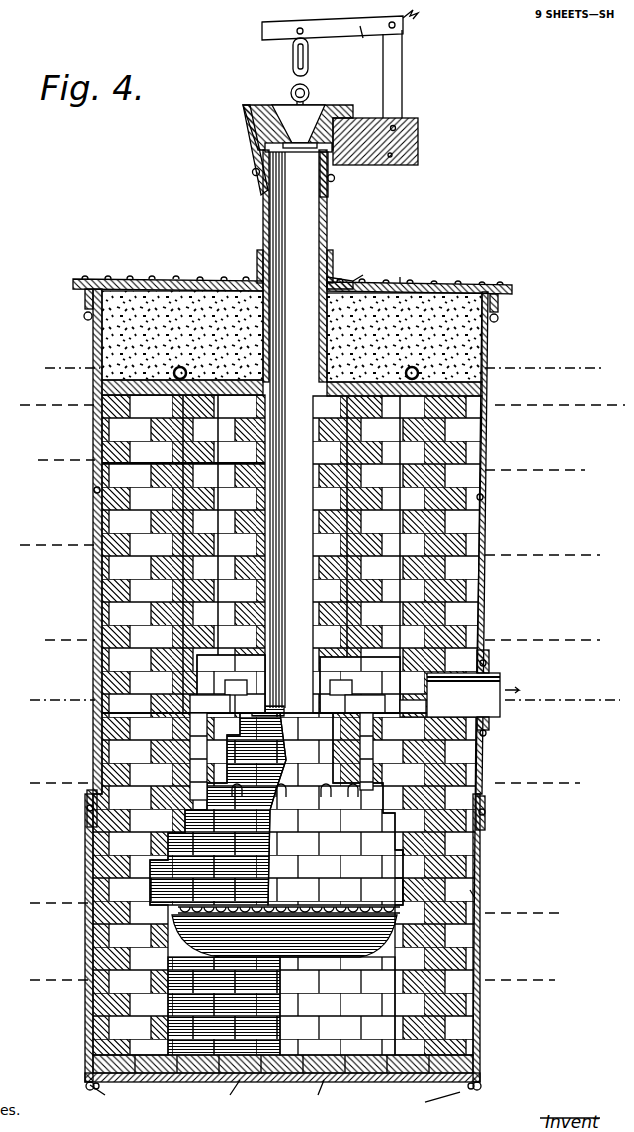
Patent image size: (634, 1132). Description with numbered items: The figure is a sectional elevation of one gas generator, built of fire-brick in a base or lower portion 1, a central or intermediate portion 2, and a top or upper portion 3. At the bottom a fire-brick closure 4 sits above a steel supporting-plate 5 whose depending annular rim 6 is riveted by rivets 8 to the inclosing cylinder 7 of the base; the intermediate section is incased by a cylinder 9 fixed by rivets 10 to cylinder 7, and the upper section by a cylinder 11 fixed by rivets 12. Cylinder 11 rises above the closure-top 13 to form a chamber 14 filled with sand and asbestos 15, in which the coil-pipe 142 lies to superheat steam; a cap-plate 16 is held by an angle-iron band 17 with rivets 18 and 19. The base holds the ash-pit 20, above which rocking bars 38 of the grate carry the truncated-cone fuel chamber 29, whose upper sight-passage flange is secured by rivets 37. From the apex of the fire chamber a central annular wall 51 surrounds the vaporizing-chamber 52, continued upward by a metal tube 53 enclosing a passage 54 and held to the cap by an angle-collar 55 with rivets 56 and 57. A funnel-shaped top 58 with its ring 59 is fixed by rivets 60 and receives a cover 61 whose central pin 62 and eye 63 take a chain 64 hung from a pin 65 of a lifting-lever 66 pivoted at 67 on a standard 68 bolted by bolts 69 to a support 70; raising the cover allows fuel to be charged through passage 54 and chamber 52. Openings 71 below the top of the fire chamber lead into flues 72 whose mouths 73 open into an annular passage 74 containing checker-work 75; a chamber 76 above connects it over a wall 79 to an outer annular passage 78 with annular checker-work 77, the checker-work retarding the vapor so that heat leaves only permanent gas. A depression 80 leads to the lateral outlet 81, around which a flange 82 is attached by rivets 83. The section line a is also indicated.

The base or lower portion 1 is at (85, 933).
The central or intermediate portion 2 is at (93, 694).
The top or upper portion 3 is at (482, 366).
The closure 4 is at (251, 1082).
The supporting-plate 5 is at (325, 733).
The depending annular rim 6 is at (319, 759).
The inclosing or incasing cylinder 7 is at (307, 675).
The rivets 8 is at (315, 856).
The cylinder 9 is at (80, 600).
The rivets 10 is at (87, 800).
The cylinder 11 is at (102, 411).
The rivets 12 is at (94, 492).
The closure-top 13 is at (102, 386).
The chamber 14 is at (162, 280).
The sand and asbestos 15 is at (292, 336).
The cap-plate or cover 16 is at (401, 269).
The angle-iron band 17 is at (85, 299).
The rivets 18 is at (510, 326).
The rivets 19 is at (108, 278).
The ash-pit 20 is at (298, 1055).
The fuel or fire chamber 29 is at (285, 884).
The rivets 37 is at (284, 936).
The rocking bars 38 is at (289, 901).
The central annular wall 51 is at (275, 585).
The vaporizing-chamber 52 is at (313, 410).
The metal tube 53 is at (327, 215).
The passage 54 is at (284, 266).
The angle-collar 55 is at (340, 278).
The rivets 56 is at (366, 271).
The rivets 57 is at (333, 262).
The funnel-shaped top 58 is at (265, 145).
The ring or band 59 is at (262, 188).
The rivets 60 is at (252, 172).
The cover 61 is at (246, 112).
The central pin 62 is at (282, 115).
The eye 63 is at (309, 90).
The chain 64 is at (308, 70).
The pin 65 is at (300, 29).
The lifting-lever 66 is at (359, 42).
The pin or pivot 67 is at (405, 30).
The standard or upright 68 is at (402, 72).
The bolts 69 is at (394, 127).
The support 70 is at (406, 165).
The openings or outlets 71 is at (368, 792).
The flue or passage 72 is at (283, 756).
The opening or mouth 73 is at (287, 704).
The annular passage 74 is at (298, 684).
The checker-work 75 is at (270, 550).
The passage or chamber 76 is at (313, 430).
The annular checker-work 77 is at (453, 460).
The annular passage 78 is at (96, 678).
The wall 79 is at (155, 566).
The depression 80 is at (413, 708).
The lateral passage or outlet 81 is at (473, 695).
The flange 82 is at (489, 660).
The rivets 83 is at (484, 658).
The coil-pipe 142 is at (174, 373).
The point a is at (18, 545).